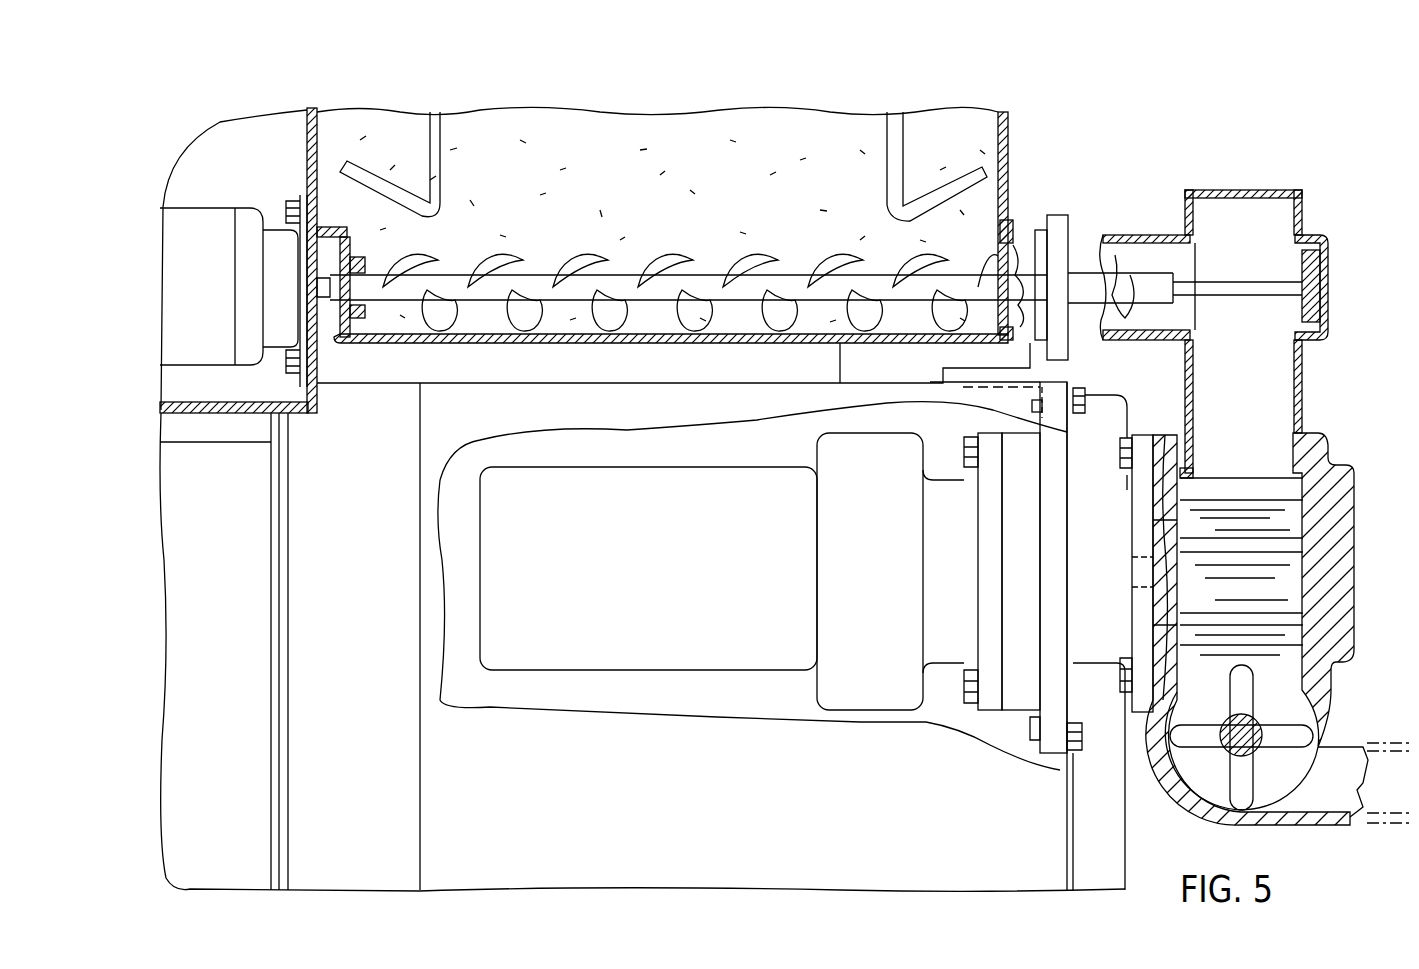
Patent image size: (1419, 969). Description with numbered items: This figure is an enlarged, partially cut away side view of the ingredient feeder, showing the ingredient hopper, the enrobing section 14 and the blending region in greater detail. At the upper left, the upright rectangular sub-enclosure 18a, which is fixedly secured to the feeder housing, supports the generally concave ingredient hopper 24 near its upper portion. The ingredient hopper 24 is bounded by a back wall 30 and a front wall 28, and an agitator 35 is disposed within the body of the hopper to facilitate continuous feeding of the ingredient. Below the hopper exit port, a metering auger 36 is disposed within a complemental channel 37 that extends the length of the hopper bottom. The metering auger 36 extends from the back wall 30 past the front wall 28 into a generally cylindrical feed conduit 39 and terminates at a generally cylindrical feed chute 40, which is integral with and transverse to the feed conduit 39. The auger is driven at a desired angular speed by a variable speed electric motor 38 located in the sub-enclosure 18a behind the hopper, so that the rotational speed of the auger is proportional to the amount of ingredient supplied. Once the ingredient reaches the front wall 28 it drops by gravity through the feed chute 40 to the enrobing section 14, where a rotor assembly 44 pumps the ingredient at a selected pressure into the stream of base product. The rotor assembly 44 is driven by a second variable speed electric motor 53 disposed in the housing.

The enrobing section 14 is at (1365, 563).
The sub-enclosure 18a is at (202, 158).
The ingredient hopper 24 is at (808, 125).
The front wall 28 is at (1008, 163).
The back wall 30 is at (325, 135).
The agitator 35 is at (898, 143).
The metering auger 36 is at (937, 253).
The channel 37 is at (385, 241).
The variable speed electric motor 38 is at (208, 225).
The feed conduit 39 is at (1148, 233).
The feed chute 40 is at (1282, 363).
The rotor assembly 44 is at (1250, 537).
The variable speed electric motor 53 is at (740, 657).